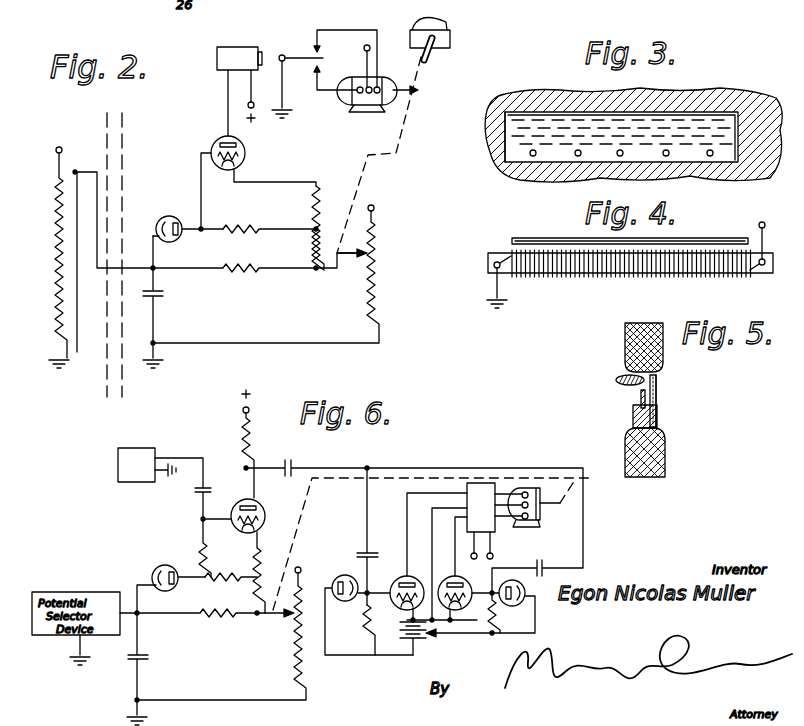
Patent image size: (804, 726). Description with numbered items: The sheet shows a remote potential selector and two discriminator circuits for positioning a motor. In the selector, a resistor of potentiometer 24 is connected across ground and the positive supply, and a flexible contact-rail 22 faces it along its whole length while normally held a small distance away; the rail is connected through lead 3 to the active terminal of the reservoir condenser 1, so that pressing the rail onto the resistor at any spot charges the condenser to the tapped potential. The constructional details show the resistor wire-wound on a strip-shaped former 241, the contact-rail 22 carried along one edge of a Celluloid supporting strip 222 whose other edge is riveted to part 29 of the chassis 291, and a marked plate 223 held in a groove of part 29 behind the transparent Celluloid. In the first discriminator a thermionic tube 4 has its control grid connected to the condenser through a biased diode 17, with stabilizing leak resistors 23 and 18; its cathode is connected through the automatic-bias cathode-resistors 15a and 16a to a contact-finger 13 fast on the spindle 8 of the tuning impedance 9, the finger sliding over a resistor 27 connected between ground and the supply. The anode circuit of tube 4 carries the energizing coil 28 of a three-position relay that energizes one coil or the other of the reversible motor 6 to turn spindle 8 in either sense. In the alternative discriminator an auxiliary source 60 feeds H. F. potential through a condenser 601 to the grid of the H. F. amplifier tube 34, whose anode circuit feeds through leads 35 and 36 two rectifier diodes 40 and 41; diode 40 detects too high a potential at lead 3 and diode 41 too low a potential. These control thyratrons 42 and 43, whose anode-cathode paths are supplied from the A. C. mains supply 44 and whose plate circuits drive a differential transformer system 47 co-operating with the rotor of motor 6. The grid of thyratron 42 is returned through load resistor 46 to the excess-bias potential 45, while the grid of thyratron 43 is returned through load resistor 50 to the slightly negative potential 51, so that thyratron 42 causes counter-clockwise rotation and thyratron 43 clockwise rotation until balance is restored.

In FIG. 2, the reservoir condenser 1 is at (160, 296).
In FIG. 6, the reservoir condenser 1 is at (146, 652).
In FIG. 2, the lead 3 is at (130, 268).
In FIG. 6, the lead 3 is at (135, 600).
In FIG. 2, the thermionic tube 4 is at (214, 146).
In FIG. 2, the motor 6 is at (358, 106).
In FIG. 6, the motor 6 is at (540, 524).
In FIG. 2, the spindle 8 is at (412, 115).
In FIG. 6, the spindle 8 is at (590, 479).
In FIG. 2, the tuning impedance 9 is at (450, 33).
In FIG. 2, the contact-finger 13 is at (353, 259).
In FIG. 6, the contact-finger 13 is at (278, 616).
In FIG. 2, the biasing source of potential 15a is at (313, 258).
In FIG. 2, the biasing source of potential 16a is at (313, 213).
In FIG. 2, the biased diode 17 is at (170, 216).
In FIG. 6, the biased diode 17 is at (166, 565).
In FIG. 2, the stabilizing leak resistor 18 is at (228, 227).
In FIG. 6, the stabilizing leak resistor 18 is at (228, 574).
In FIG. 2, the flexible contact-rail 22 is at (78, 278).
In FIG. 3, the flexible contact-rail 22 is at (530, 95).
In FIG. 4, the flexible contact-rail 22 is at (536, 246).
In FIG. 5, the flexible contact-rail 22 is at (657, 393).
In FIG. 2, the stabilizing leak resistor 23 is at (238, 275).
In FIG. 6, the stabilizing leak resistor 23 is at (226, 619).
In FIG. 2, the resistor of potentiometer 24 is at (58, 240).
In FIG. 4, the resistor of potentiometer 24 is at (522, 282).
In FIG. 5, the resistor of potentiometer 24 is at (616, 386).
In FIG. 2, the resistor 27 is at (377, 275).
In FIG. 6, the resistor 27 is at (296, 650).
In FIG. 2, the energizing coil of motor-relay 28 is at (229, 51).
In FIG. 3, the part of chassis 29 is at (502, 176).
In FIG. 5, the part of chassis 29 is at (633, 418).
In FIG. 6, the H. F. amplifier tube 34 is at (259, 512).
In FIG. 6, the lead 35 is at (367, 513).
In FIG. 6, the lead 36 is at (584, 503).
In FIG. 6, the rectifier diode 40 is at (352, 601).
In FIG. 6, the rectifier diode 41 is at (506, 605).
In FIG. 6, the thyratron 42 is at (410, 574).
In FIG. 6, the thyratron 43 is at (452, 576).
In FIG. 6, the A. C. mains supply 44 is at (458, 623).
In FIG. 6, the excess-bias potential 45 is at (411, 645).
In FIG. 6, the load resistor 46 is at (362, 629).
In FIG. 6, the differential transformer system 47 is at (494, 507).
In FIG. 6, the load resistor 50 is at (495, 629).
In FIG. 6, the grid bias potential 51 is at (430, 643).
In FIG. 6, the auxiliary source 60 is at (140, 448).
In FIG. 6, the capacitor 601 is at (200, 495).
In FIG. 3, the supporting strip 222 is at (518, 138).
In FIG. 4, the supporting strip 222 is at (520, 240).
In FIG. 5, the supporting strip 222 is at (657, 405).
In FIG. 3, the plate 223 is at (597, 120).
In FIG. 5, the plate 223 is at (640, 400).
In FIG. 4, the strip-shaped former 241 is at (580, 270).
In FIG. 5, the strip-shaped former 241 is at (619, 375).
In FIG. 3, the chassis 291 is at (690, 100).
In FIG. 5, the chassis 291 is at (666, 447).